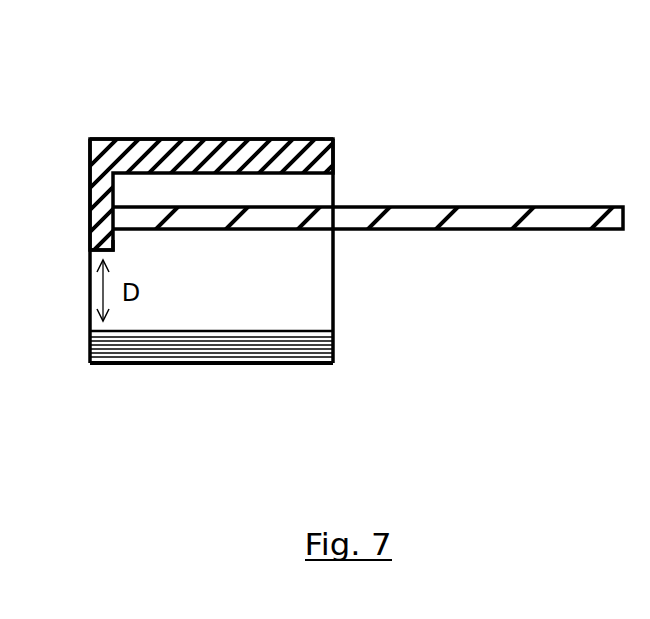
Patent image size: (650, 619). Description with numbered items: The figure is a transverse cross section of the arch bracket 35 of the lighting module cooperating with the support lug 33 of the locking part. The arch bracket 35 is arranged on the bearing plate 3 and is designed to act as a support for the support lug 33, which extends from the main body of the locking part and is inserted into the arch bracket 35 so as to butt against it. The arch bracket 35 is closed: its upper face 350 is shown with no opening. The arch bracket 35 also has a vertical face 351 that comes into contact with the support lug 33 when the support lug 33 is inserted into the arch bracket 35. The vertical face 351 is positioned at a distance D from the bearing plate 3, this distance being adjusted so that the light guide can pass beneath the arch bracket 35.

The bearing plate 3 is at (208, 350).
The support lug 33 is at (415, 204).
The arch bracket 35 is at (248, 137).
The upper face 350 is at (168, 140).
The vertical face 351 is at (89, 211).